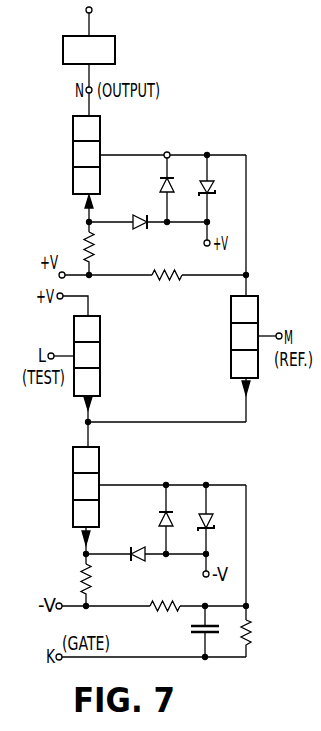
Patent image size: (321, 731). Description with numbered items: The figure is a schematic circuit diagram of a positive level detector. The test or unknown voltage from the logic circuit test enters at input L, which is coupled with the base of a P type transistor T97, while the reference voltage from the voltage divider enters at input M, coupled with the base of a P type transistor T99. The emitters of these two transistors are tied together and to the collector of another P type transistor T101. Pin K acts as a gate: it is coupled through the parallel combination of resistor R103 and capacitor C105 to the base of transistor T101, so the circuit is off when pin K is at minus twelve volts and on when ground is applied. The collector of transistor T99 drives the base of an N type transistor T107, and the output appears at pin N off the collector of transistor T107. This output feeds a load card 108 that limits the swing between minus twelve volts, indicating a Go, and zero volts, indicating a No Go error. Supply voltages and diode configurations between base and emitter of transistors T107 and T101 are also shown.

The load card 108 is at (112, 36).
The N type transistor T107 is at (100, 139).
The P type transistor T97 is at (100, 358).
The P type transistor T99 is at (231, 334).
The P type transistor T101 is at (99, 473).
The capacitor C105 is at (190, 630).
The resistor R103 is at (252, 630).